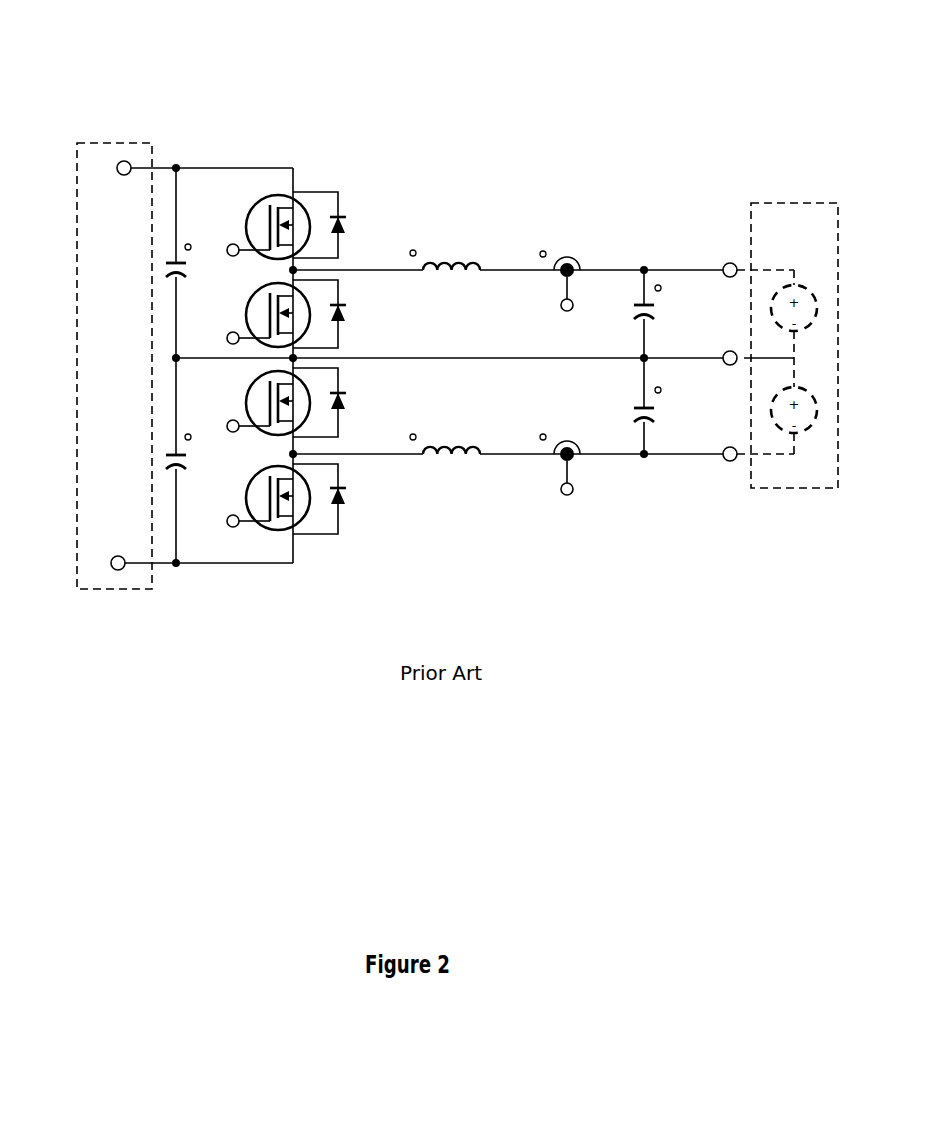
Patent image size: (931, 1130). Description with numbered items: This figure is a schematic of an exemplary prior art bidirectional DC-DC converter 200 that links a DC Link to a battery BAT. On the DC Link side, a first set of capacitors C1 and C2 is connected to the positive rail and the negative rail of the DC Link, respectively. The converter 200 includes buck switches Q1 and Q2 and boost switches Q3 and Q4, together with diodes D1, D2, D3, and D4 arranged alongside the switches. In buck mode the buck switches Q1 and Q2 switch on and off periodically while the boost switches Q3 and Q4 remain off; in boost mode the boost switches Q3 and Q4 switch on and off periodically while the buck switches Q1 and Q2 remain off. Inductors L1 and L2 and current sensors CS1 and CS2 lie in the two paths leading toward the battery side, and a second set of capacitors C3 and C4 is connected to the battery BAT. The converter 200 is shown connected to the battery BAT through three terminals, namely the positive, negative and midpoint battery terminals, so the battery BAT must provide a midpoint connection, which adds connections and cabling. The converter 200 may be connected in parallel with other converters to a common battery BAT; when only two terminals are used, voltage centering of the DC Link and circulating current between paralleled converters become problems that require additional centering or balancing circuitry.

The bidirectional DC-DC converter 200 is at (443, 98).
The buck switch Q1 is at (262, 227).
The buck switch Q2 is at (262, 498).
The boost switch Q3 is at (262, 315).
The boost switch Q4 is at (262, 403).
The diode D1 is at (337, 225).
The diode D2 is at (337, 499).
The diode D3 is at (337, 314).
The diode D4 is at (337, 402).
The capacitor C1 is at (192, 262).
The capacitor C2 is at (192, 453).
The capacitor C3 is at (660, 304).
The capacitor C4 is at (660, 406).
The inductor L1 is at (445, 252).
The inductor L2 is at (445, 435).
The current sensor CS1 is at (562, 262).
The current sensor CS2 is at (563, 448).
The battery BAT is at (787, 345).